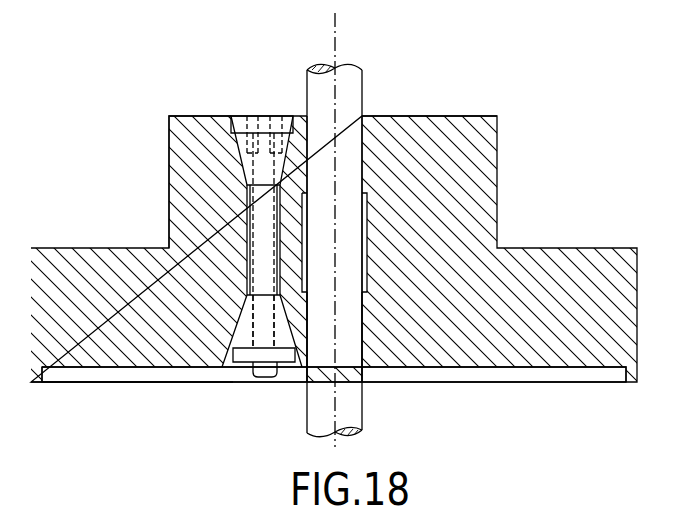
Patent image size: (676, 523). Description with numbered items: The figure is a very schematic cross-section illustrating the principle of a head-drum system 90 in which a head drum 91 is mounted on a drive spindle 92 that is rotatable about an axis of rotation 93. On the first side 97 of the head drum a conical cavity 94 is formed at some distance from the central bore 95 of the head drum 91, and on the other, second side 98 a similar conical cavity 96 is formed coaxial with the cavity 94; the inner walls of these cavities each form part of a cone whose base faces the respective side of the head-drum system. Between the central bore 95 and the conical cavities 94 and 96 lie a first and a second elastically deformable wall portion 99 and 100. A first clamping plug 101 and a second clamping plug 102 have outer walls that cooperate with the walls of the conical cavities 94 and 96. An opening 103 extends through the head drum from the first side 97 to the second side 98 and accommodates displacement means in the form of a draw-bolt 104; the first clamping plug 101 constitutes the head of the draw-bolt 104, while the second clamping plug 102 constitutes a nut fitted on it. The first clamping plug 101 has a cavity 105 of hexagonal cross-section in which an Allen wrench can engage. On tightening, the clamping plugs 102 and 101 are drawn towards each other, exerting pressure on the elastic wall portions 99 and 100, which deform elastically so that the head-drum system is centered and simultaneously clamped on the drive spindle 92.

The head-drum system 90 is at (128, 243).
The head drum 91 is at (535, 255).
The drive spindle 92 is at (352, 103).
The axis of rotation 93 is at (338, 54).
The conical cavity 94 is at (232, 142).
The central bore 95 is at (365, 206).
The conical cavity 96 is at (232, 366).
The first side 97 is at (440, 116).
The second side 98 is at (436, 372).
The first elastically deformable wall portion 99 is at (296, 159).
The second elastically deformable wall portion 100 is at (300, 316).
The first clamping plug 101 is at (252, 164).
The second clamping plug 102 is at (265, 315).
The opening 103 is at (248, 252).
The draw-bolt 104 is at (263, 222).
The cavity of hexagonal cross-section 105 is at (262, 128).